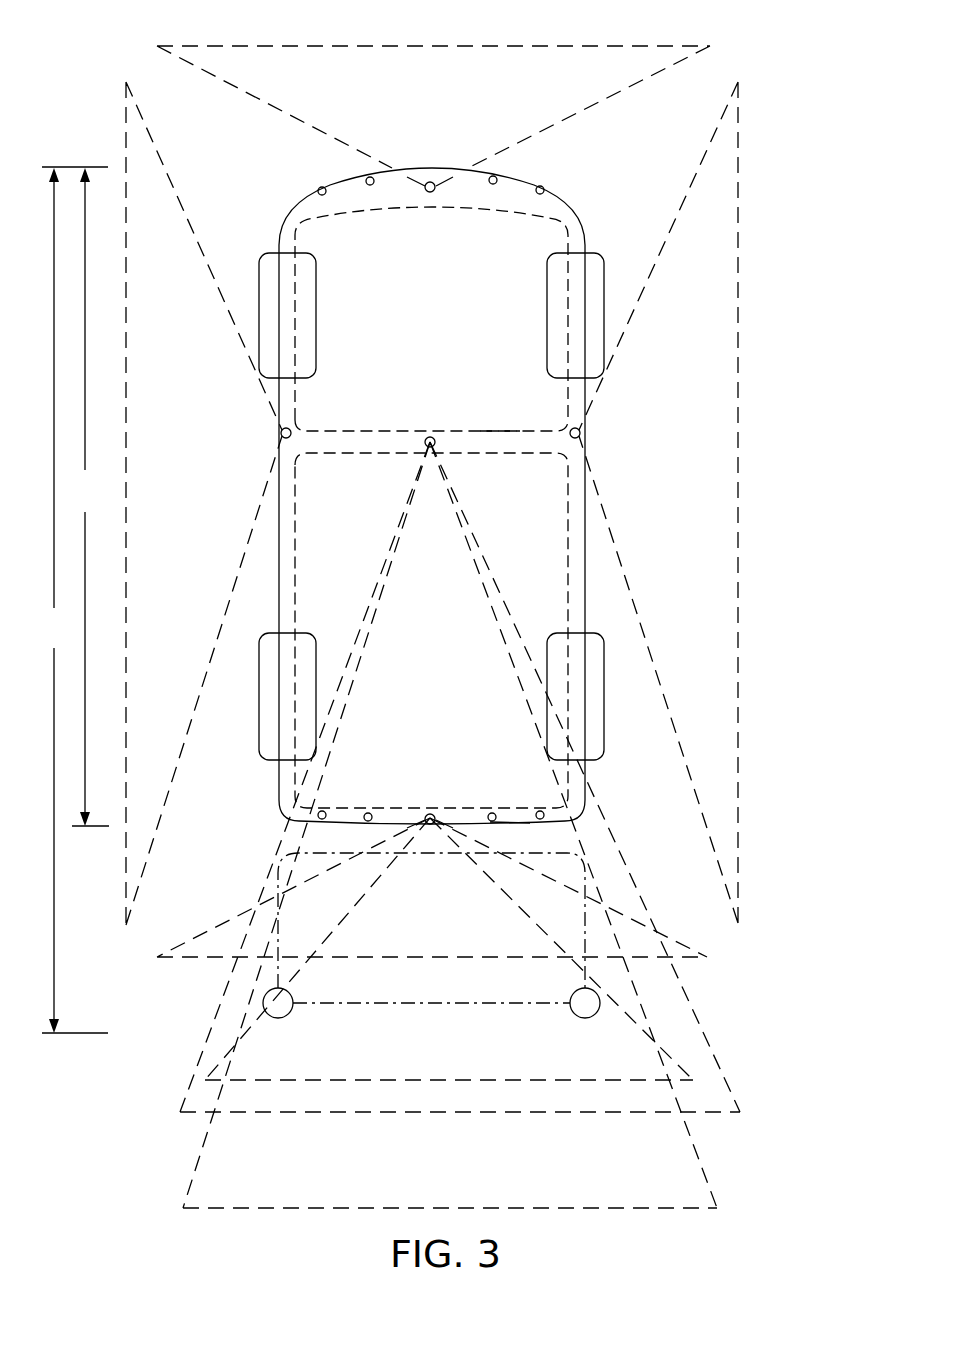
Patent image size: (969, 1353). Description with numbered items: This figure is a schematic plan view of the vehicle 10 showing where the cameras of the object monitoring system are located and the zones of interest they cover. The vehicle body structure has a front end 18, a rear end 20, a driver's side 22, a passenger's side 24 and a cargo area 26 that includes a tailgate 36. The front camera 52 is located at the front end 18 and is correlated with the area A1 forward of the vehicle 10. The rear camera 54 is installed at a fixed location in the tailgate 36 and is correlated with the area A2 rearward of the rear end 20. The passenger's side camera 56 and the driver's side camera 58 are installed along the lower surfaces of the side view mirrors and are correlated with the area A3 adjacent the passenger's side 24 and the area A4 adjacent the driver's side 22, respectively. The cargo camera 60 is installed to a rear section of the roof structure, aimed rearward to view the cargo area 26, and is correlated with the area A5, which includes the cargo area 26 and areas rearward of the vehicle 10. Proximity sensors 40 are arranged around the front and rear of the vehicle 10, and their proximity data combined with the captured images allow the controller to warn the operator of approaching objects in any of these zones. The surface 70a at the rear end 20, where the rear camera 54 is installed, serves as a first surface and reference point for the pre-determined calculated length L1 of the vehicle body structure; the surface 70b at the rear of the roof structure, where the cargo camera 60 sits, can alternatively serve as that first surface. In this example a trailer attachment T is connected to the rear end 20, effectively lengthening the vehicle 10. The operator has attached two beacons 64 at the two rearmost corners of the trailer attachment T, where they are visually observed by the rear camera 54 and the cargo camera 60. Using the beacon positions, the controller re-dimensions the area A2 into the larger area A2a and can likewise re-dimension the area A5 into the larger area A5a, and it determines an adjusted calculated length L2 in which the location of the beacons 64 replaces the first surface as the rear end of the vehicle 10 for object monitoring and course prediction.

The vehicle 10 is at (548, 173).
The front end 18 is at (448, 168).
The rear end 20 is at (357, 827).
The driver's side 22 is at (277, 572).
The passenger's side 24 is at (588, 578).
The cargo area 26 is at (362, 488).
The tailgate 36 is at (397, 818).
The proximity sensors 40 is at (368, 178).
The front camera 52 is at (427, 183).
The rear camera 54 is at (432, 813).
The passenger's side camera 56 is at (580, 433).
The driver's side camera 58 is at (281, 433).
The cargo camera 60 is at (432, 438).
The beacon 64 is at (278, 1018).
The surface 70a is at (510, 828).
The surface 70b is at (493, 420).
The area A1 is at (300, 88).
The area A2 is at (213, 942).
The area A2a is at (683, 1060).
The area A3 is at (692, 266).
The area A4 is at (195, 285).
The area A5 is at (500, 612).
The area A5a is at (667, 1162).
The pre-determined calculated length L1 is at (90, 497).
The adjusted calculated length L2 is at (75, 600).
The trailer attachment T is at (457, 1006).